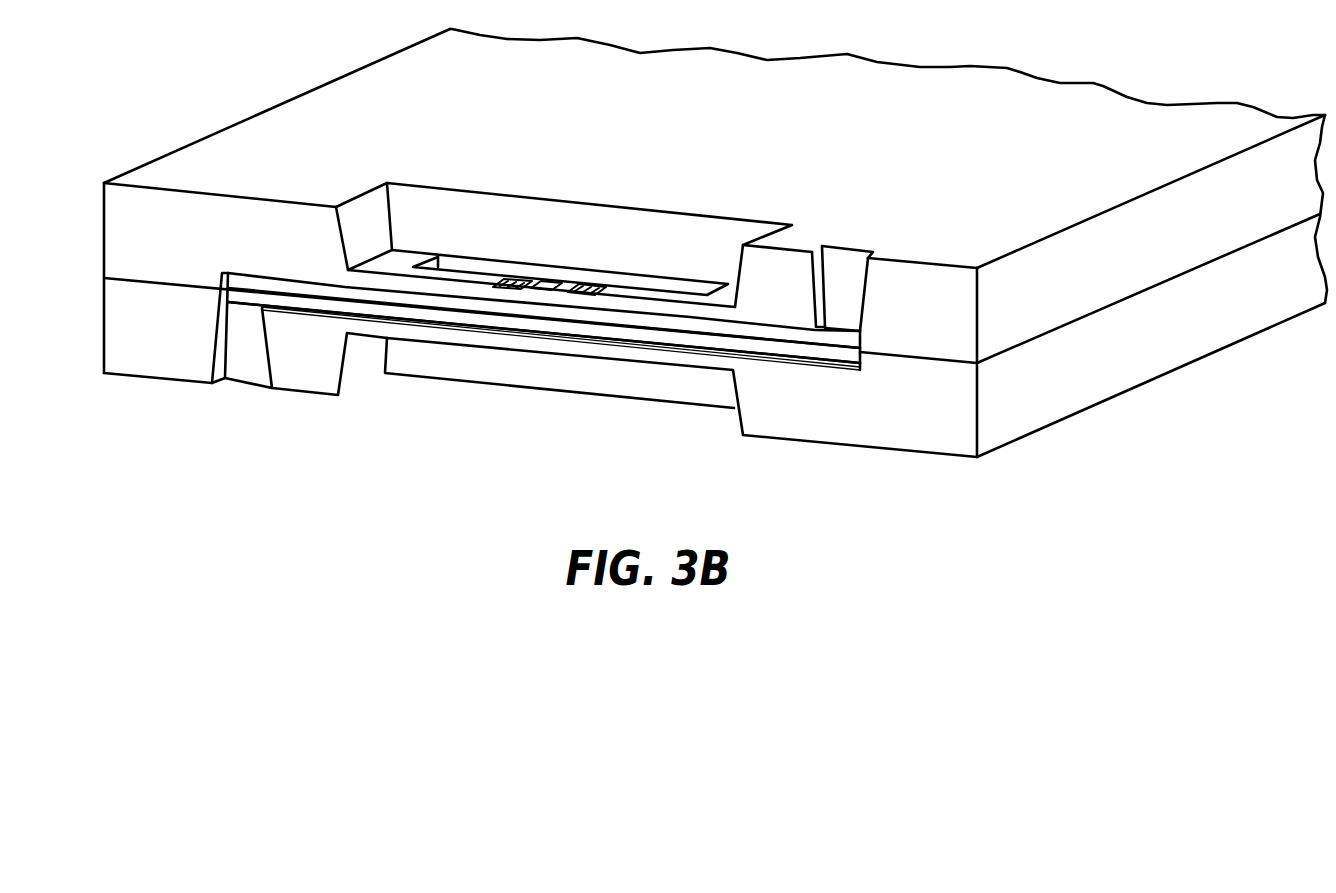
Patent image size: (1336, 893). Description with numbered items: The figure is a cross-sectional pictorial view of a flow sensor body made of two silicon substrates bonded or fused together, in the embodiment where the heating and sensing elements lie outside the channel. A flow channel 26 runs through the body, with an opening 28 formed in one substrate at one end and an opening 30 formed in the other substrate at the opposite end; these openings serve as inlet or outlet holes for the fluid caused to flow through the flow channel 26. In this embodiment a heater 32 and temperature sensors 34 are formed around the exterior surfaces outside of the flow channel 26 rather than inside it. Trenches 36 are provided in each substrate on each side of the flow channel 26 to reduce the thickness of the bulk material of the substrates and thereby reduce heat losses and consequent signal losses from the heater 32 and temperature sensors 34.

The flow channel 26 is at (433, 312).
The opening 28 is at (843, 273).
The opening 30 is at (243, 357).
The heater 32 is at (553, 279).
The temperature sensors 34 is at (513, 277).
The trenches 36 is at (362, 228).